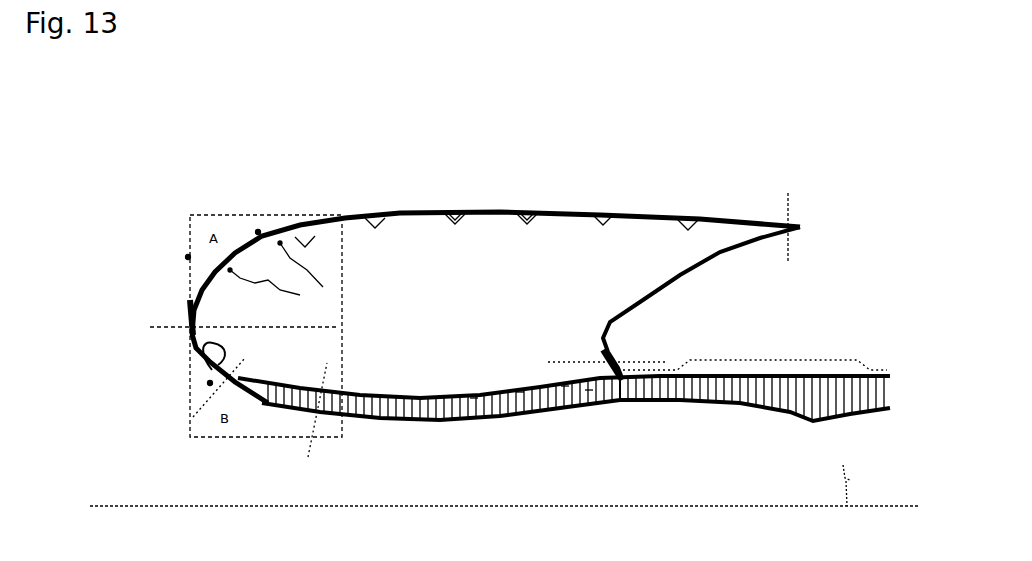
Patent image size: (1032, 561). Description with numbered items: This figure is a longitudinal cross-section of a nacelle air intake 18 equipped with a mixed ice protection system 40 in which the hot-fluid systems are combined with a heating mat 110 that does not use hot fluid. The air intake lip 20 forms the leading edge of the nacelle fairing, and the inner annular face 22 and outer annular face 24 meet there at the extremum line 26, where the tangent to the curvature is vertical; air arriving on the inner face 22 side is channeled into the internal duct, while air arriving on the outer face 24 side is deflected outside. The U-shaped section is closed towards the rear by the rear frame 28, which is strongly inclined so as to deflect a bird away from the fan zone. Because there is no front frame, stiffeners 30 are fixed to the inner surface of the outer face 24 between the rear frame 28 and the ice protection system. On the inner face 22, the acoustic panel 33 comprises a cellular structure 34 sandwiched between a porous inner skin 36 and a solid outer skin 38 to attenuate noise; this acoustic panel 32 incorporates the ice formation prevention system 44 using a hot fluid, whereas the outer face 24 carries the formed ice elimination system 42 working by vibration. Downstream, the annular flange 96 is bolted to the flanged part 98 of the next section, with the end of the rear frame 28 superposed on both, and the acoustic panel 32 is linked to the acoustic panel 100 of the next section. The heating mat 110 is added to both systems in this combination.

The air intake 18 is at (540, 190).
The air intake lip 20 is at (230, 270).
The inner annular face 22 is at (435, 418).
The outer annular face 24 is at (418, 212).
The extremum line 26 is at (150, 327).
The rear frame 28 is at (716, 250).
The stiffeners 30 is at (523, 212).
The acoustic panel 32 is at (282, 405).
The acoustic panel 33 is at (520, 420).
The cellular structure 34 is at (588, 410).
The inner skin 36 is at (474, 420).
The outer skin 38 is at (565, 412).
The mixed ice protection system 40 is at (188, 257).
The formed ice elimination system 42 is at (258, 232).
The ice formation prevention system 44 is at (210, 383).
The annular flange 96 is at (620, 400).
The flanged part 98 is at (648, 400).
The acoustic panel of the next section 100 is at (685, 400).
The heating mat 110 is at (255, 253).